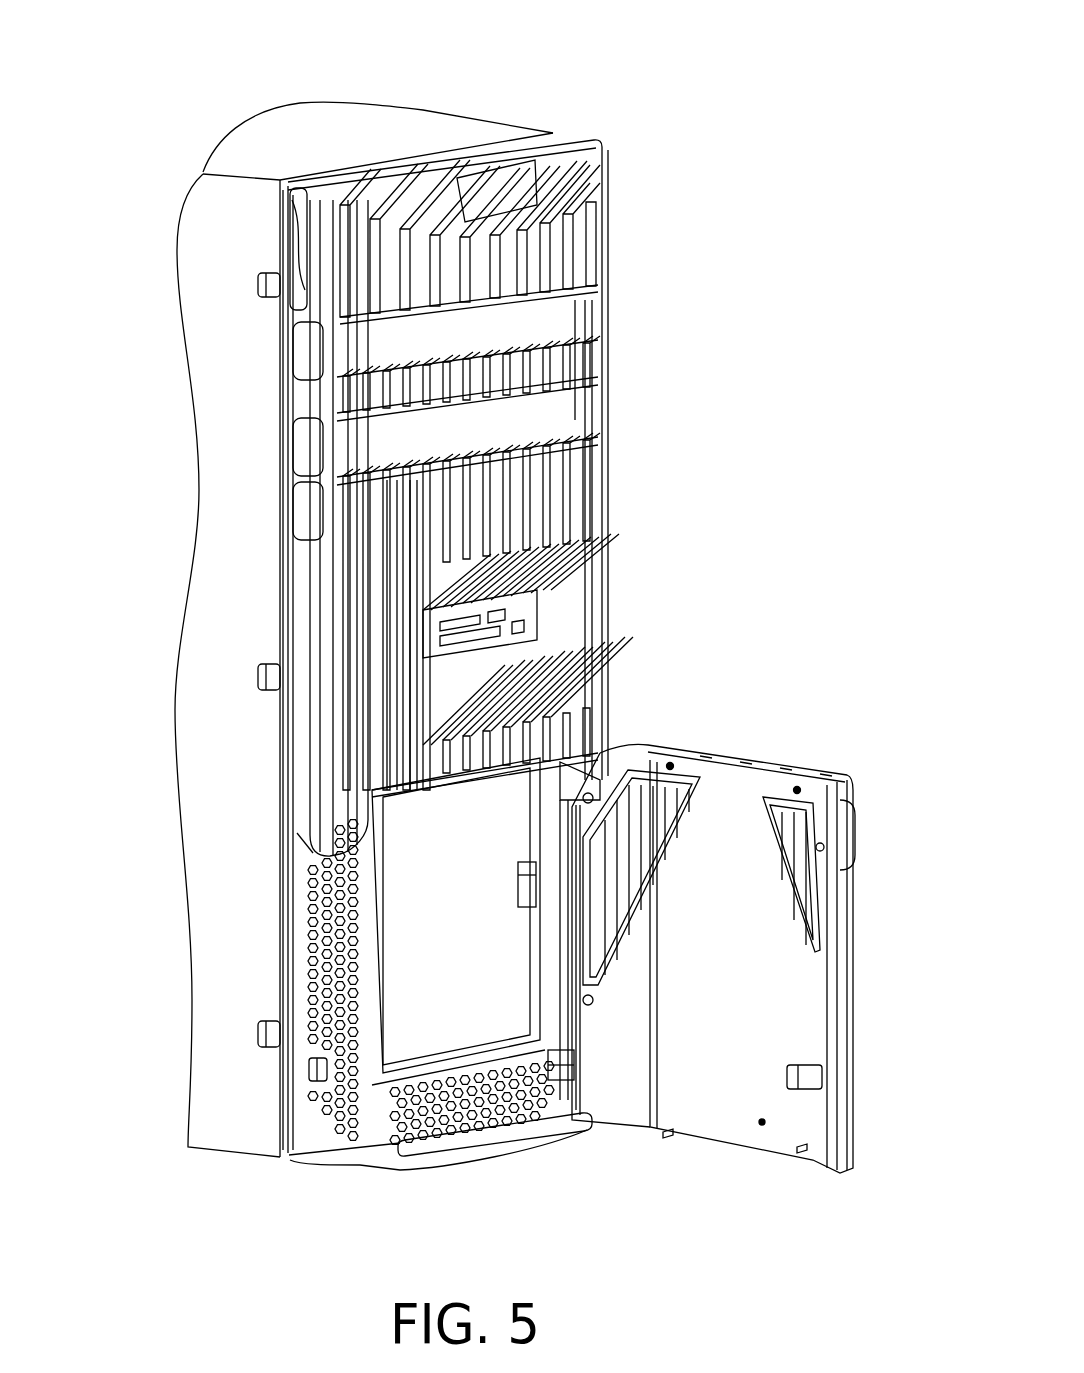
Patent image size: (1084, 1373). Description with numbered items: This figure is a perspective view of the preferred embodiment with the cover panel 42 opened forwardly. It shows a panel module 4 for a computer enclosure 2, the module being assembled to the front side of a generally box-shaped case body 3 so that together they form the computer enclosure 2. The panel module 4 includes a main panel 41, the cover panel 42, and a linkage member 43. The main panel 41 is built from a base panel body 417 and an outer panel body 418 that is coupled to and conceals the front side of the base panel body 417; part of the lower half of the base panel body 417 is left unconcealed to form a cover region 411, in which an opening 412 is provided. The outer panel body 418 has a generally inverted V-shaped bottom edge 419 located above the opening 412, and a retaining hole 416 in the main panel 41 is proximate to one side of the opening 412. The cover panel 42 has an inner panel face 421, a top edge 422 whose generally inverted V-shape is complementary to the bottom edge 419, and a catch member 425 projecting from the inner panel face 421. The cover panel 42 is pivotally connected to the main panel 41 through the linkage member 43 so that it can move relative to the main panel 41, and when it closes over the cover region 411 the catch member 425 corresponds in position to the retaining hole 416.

The computer enclosure 2 is at (553, 118).
The case body 3 is at (290, 130).
The panel module 4 is at (655, 430).
The main panel 41 is at (563, 249).
The cover region 411 is at (480, 1130).
The opening 412 is at (487, 1012).
The retaining hole 416 is at (311, 1071).
The base panel body 417 is at (285, 932).
The outer panel body 418 is at (333, 633).
The bottom edge 419 is at (455, 794).
The cover panel 42 is at (745, 760).
The inner panel face 421 is at (630, 1110).
The top edge 422 is at (785, 768).
The catch member 425 is at (788, 1078).
The linkage member 43 is at (568, 930).